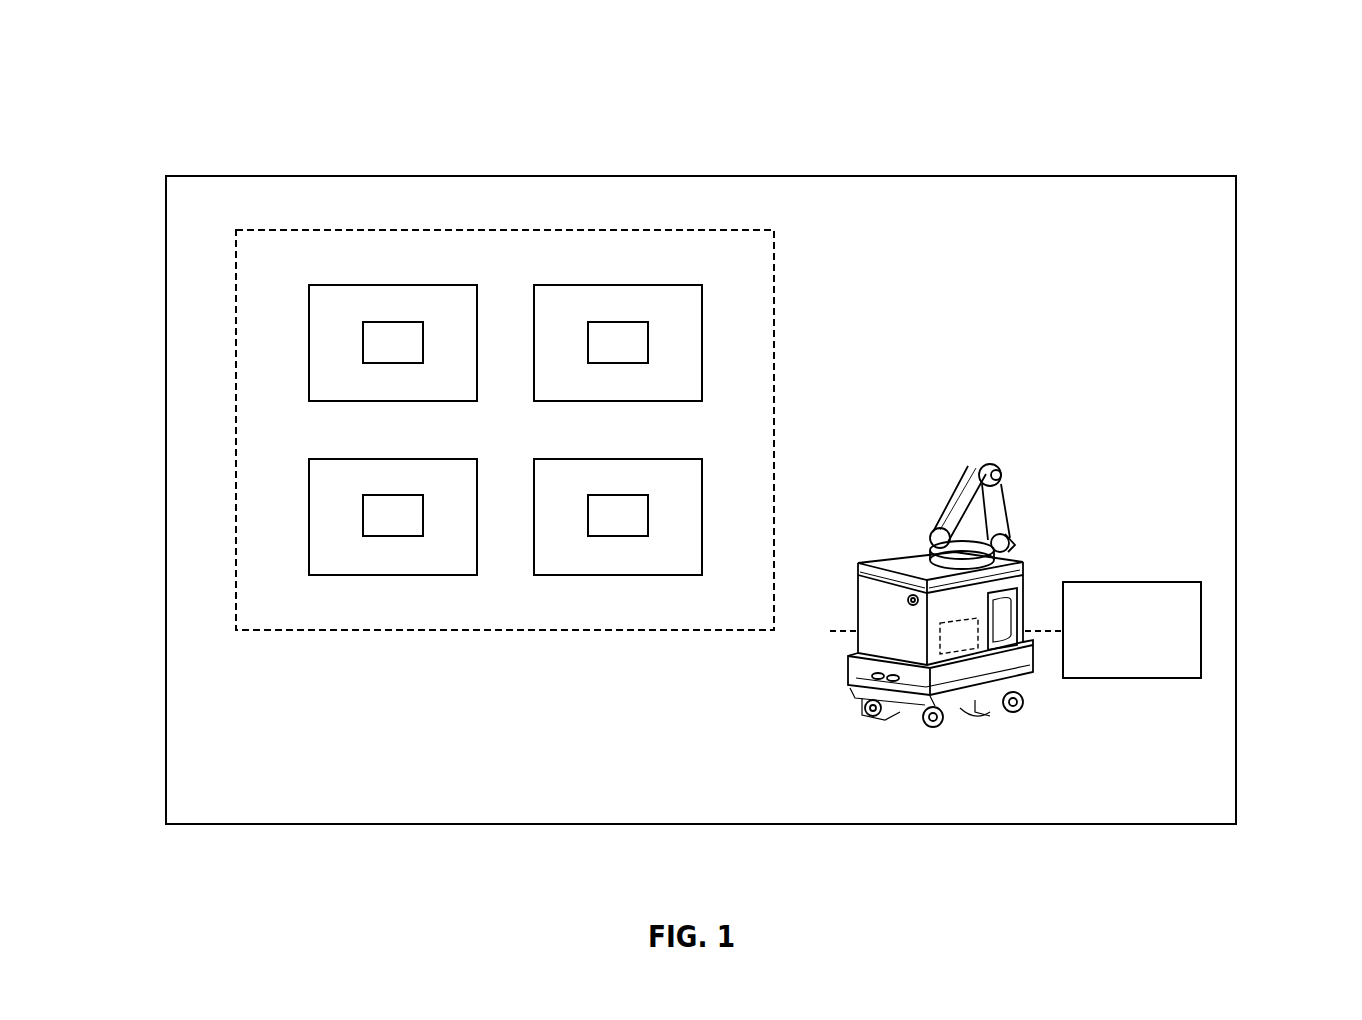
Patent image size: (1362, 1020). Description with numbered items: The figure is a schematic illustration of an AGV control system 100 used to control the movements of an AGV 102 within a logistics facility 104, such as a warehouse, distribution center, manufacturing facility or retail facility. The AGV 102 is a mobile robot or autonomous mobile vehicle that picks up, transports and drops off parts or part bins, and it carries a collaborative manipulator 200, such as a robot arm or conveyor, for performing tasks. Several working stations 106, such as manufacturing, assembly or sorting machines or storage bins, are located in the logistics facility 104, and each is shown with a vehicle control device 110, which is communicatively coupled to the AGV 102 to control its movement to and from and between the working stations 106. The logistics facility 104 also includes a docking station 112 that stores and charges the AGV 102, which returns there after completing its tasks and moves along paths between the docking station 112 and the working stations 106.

The AGV control system 100 is at (421, 76).
The AGV 102 is at (1052, 503).
The logistics facility 104 is at (1110, 168).
The working station 106 is at (309, 342).
The vehicle control device 110 is at (392, 322).
The docking station 112 is at (1135, 582).
The collaborative manipulator 200 is at (1016, 465).